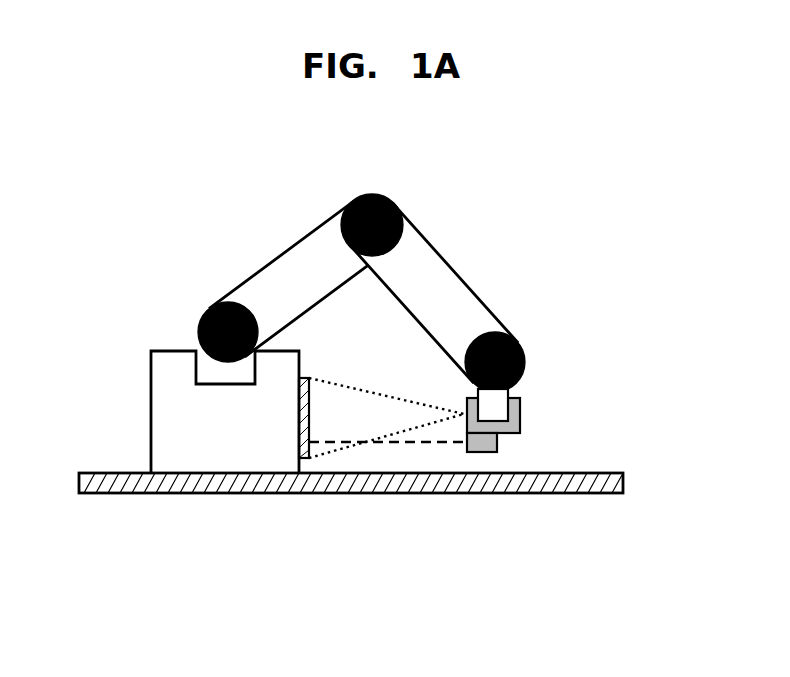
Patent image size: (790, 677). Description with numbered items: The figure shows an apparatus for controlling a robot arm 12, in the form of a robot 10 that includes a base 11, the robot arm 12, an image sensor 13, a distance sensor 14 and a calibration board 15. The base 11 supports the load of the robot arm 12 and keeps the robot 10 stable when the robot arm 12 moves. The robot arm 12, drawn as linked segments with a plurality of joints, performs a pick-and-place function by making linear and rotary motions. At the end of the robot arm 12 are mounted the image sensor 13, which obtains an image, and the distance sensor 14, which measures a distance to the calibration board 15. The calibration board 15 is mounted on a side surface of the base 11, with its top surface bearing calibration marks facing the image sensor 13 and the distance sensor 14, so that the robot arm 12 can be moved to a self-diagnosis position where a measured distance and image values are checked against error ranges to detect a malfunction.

The robot 10 is at (533, 178).
The base 11 is at (168, 412).
The robot arm 12 is at (445, 292).
The image sensor 13 is at (518, 407).
The distance sensor 14 is at (487, 446).
The calibration board 15 is at (298, 427).